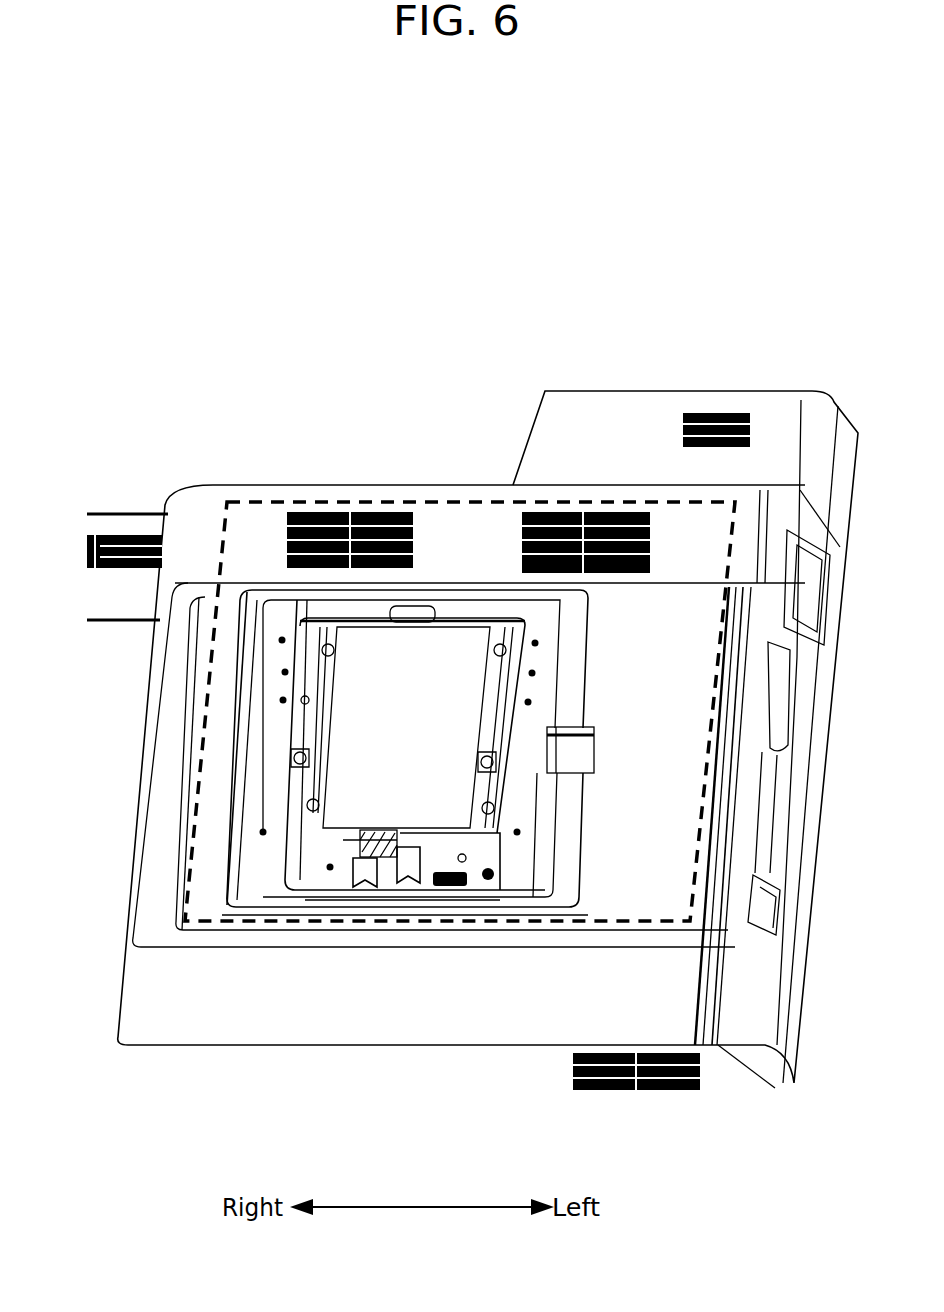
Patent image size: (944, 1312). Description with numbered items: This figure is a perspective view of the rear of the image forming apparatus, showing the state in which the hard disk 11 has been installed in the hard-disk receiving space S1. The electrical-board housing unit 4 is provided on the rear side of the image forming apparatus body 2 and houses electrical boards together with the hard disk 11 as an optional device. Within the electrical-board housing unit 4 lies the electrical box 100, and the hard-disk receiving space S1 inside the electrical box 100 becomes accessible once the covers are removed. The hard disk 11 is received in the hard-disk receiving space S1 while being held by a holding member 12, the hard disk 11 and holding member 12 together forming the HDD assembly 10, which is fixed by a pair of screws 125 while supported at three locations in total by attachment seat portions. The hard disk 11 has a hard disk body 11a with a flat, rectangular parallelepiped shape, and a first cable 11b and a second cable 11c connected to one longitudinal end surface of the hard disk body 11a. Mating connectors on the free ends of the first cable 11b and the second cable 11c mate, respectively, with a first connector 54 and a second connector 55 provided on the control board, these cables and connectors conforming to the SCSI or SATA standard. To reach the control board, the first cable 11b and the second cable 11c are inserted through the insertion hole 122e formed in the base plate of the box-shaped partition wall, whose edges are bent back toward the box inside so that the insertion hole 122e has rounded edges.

The image forming apparatus body 2 is at (144, 512).
The electrical-board housing unit 4 is at (310, 483).
The electrical box 100 is at (243, 503).
The HDD assembly 10 is at (510, 376).
The hard disk 11 is at (445, 657).
The holding member 12 is at (490, 688).
The screws 125 is at (487, 763).
The hard-disk receiving space S1 is at (314, 690).
The hard disk body 11a is at (343, 813).
The first cable 11b is at (360, 860).
The second cable 11c is at (407, 873).
The first connector 54 is at (453, 887).
The second connector 55 is at (487, 880).
The insertion hole 122e is at (463, 862).